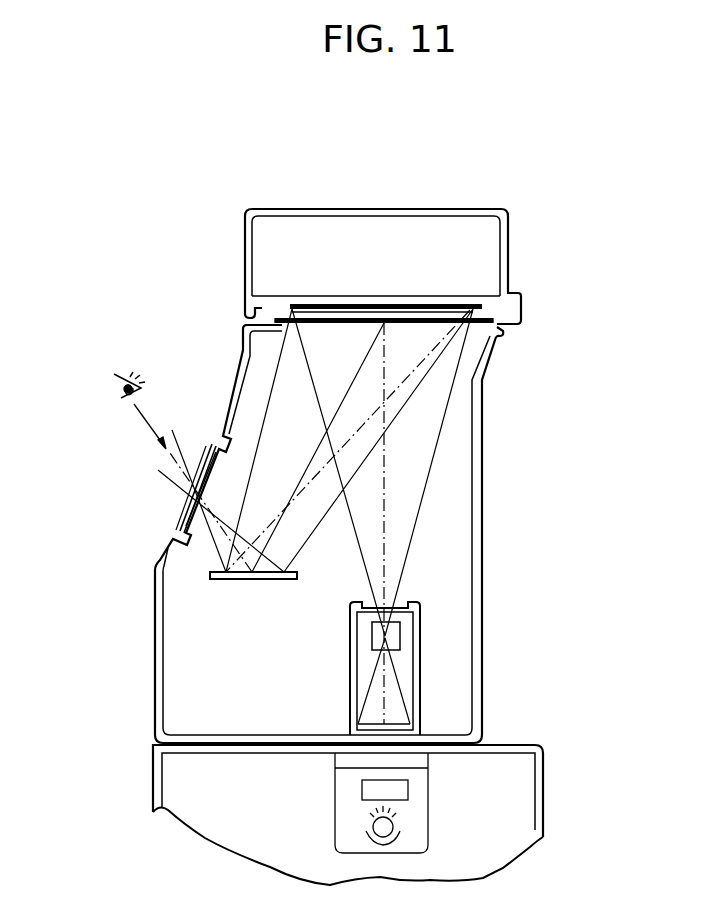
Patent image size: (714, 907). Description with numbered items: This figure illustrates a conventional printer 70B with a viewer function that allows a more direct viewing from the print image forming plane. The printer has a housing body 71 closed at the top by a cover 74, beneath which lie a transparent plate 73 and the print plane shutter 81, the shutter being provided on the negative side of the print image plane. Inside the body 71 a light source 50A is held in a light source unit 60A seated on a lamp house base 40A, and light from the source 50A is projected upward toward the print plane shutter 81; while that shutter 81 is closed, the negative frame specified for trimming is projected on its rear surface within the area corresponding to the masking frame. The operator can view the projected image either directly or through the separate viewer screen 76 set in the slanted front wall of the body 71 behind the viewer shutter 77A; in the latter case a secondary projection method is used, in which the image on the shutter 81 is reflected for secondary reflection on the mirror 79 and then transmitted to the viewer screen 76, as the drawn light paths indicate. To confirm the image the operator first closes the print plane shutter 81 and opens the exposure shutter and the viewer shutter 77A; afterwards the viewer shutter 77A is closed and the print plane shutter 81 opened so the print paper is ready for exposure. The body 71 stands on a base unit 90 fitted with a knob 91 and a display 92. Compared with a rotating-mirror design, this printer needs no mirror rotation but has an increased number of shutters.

The cover 74 is at (245, 226).
The transparent plate 73 is at (313, 312).
The print plane shutter 81 is at (448, 307).
The housing 70B is at (502, 360).
The housing body 71 is at (482, 428).
The viewer screen 76 is at (158, 470).
The viewer shutter 77A is at (170, 512).
The mirror 79 is at (246, 580).
The light source 50A is at (401, 635).
The light source unit 60A is at (428, 659).
The lamp house base 40A is at (400, 722).
The base unit 90 is at (437, 800).
The knob 91 is at (373, 827).
The display 92 is at (362, 790).